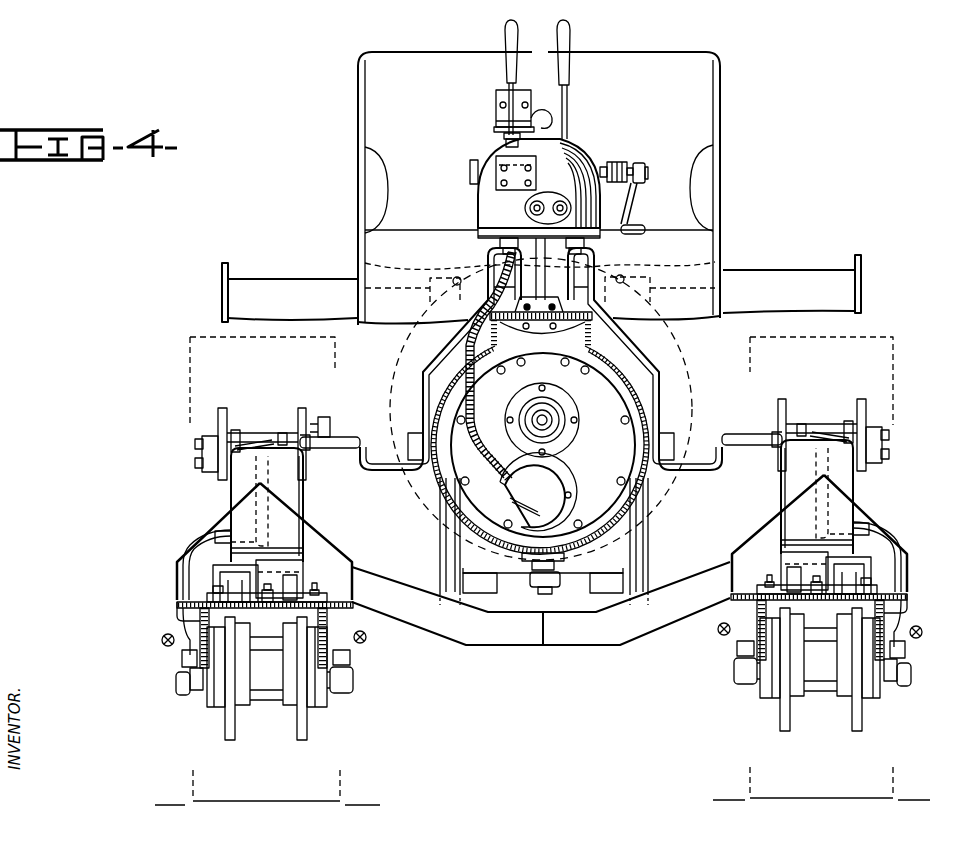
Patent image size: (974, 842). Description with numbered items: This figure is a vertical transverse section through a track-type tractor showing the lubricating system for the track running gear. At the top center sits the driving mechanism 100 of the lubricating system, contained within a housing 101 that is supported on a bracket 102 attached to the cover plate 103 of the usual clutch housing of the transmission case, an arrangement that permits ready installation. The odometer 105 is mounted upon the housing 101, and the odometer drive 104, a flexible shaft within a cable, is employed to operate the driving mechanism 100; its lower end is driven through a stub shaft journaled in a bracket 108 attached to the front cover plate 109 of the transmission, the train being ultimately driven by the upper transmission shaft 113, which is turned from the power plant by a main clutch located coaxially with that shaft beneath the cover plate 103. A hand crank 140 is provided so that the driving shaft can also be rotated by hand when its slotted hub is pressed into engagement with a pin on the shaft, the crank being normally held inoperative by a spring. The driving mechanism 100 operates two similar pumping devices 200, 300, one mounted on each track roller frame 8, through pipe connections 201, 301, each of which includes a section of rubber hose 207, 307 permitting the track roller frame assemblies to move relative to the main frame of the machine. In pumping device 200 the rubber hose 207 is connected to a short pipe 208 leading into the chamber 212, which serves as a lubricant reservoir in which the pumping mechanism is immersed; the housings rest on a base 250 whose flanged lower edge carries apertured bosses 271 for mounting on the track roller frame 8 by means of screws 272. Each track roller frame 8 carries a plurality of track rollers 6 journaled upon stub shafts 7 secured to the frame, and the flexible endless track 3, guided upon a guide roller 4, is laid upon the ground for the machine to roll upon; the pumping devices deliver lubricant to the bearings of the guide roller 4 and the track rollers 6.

The flexible endless track 3 is at (905, 773).
The guide roller 4 is at (222, 418).
The track rollers 6 is at (294, 722).
The stub shafts 7 is at (350, 680).
The track roller frame 8 is at (180, 621).
The driving mechanism 100 is at (572, 165).
The housing 101 is at (648, 159).
The bracket 102 is at (551, 295).
The cover plate 103 is at (520, 322).
The odometer drive 104 is at (470, 380).
The odometer 105 is at (496, 100).
The bracket 108 is at (577, 487).
The front cover plate 109 is at (627, 459).
The upper transmission shaft 113 is at (548, 415).
The hand crank 140 is at (636, 202).
The pumping device 200 is at (232, 486).
The pipe connection 201 is at (423, 383).
The rubber hose 207 is at (328, 440).
The short pipe 208 is at (327, 406).
The chamber 212 is at (233, 507).
The base 250 is at (287, 582).
The apertured bosses 271 is at (327, 602).
The screws 272 is at (272, 594).
The pumping device 300 is at (850, 480).
The pipe connection 301 is at (660, 386).
The rubber hose 307 is at (744, 432).